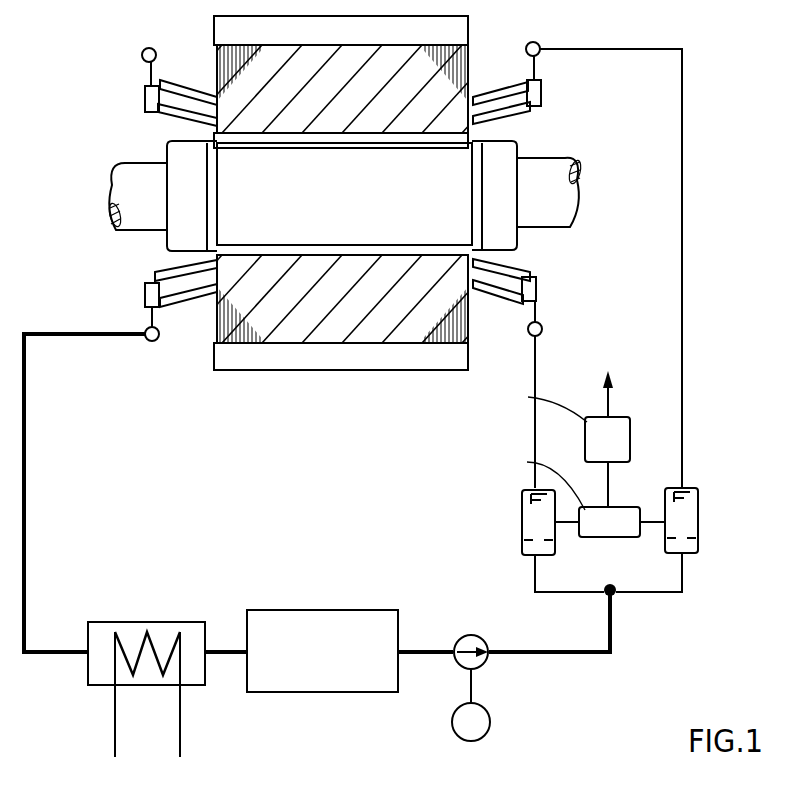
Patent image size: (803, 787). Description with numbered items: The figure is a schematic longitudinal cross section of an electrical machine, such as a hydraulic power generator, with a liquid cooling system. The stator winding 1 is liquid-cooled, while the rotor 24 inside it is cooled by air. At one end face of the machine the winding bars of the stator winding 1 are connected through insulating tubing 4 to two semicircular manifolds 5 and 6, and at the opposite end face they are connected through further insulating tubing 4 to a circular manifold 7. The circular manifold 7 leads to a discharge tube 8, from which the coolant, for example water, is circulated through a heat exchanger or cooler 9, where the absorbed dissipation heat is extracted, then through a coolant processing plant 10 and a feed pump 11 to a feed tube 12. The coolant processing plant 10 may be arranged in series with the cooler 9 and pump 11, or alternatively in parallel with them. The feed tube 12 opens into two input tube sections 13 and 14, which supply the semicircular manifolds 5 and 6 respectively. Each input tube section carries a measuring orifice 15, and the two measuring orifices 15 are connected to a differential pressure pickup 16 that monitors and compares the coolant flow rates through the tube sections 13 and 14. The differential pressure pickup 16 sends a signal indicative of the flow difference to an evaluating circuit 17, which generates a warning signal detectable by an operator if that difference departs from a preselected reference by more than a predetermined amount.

The stator winding 1 is at (172, 120).
The insulating tubing 4 is at (145, 96).
The semicircular manifold 5 is at (543, 329).
The semicircular manifold 6 is at (540, 44).
The circular manifold 7 is at (143, 49).
The discharge tube 8 is at (76, 331).
The heat exchanger or cooler 9 is at (163, 630).
The coolant processing plant 10 is at (354, 680).
The feed pump 11 is at (469, 635).
The feed tube 12 is at (614, 622).
The input tube section 13 is at (559, 595).
The input tube section 14 is at (661, 596).
The measuring orifice 15 is at (522, 523).
The differential pressure pickup 16 is at (595, 538).
The evaluating circuit 17 is at (511, 439).
The rotor 24 is at (142, 220).